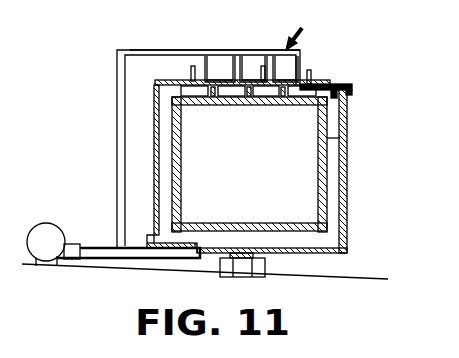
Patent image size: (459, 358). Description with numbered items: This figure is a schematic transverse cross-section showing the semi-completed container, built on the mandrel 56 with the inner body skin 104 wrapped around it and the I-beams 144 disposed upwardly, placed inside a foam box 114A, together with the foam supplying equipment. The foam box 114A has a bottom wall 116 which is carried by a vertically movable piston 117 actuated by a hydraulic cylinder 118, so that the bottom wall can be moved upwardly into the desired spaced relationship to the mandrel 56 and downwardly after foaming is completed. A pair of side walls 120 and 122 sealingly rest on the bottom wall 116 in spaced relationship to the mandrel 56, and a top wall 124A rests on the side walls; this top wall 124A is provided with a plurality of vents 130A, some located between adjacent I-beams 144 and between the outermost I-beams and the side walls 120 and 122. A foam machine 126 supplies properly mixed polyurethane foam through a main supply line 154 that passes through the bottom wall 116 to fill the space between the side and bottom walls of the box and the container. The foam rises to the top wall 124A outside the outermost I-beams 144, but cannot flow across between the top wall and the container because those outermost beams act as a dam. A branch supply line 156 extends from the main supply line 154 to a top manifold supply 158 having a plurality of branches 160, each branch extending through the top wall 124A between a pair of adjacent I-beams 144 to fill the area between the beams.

The mandrel 56 is at (186, 163).
The inner body skin 104 is at (330, 138).
The foam box 114A is at (302, 28).
The bottom wall 116 is at (322, 254).
The piston 117 is at (248, 258).
The hydraulic cylinder 118 is at (235, 272).
The side wall 120 is at (154, 163).
The side wall 122 is at (347, 175).
The top wall 124A is at (352, 86).
The foam machine 126 is at (50, 228).
The vents 130A is at (190, 68).
The I-beam 144 is at (296, 96).
The main supply line 154 is at (98, 250).
The branch supply line 156 is at (117, 113).
The top manifold supply 158 is at (188, 50).
The branches 160 is at (222, 58).